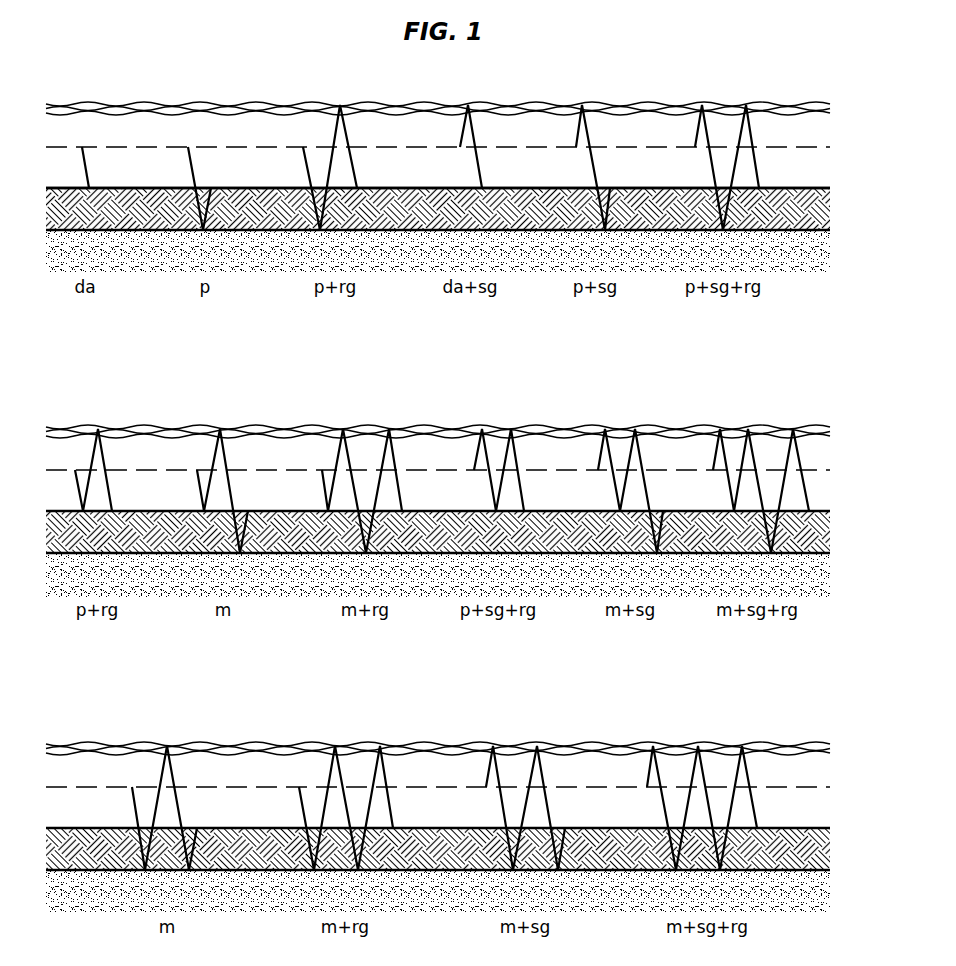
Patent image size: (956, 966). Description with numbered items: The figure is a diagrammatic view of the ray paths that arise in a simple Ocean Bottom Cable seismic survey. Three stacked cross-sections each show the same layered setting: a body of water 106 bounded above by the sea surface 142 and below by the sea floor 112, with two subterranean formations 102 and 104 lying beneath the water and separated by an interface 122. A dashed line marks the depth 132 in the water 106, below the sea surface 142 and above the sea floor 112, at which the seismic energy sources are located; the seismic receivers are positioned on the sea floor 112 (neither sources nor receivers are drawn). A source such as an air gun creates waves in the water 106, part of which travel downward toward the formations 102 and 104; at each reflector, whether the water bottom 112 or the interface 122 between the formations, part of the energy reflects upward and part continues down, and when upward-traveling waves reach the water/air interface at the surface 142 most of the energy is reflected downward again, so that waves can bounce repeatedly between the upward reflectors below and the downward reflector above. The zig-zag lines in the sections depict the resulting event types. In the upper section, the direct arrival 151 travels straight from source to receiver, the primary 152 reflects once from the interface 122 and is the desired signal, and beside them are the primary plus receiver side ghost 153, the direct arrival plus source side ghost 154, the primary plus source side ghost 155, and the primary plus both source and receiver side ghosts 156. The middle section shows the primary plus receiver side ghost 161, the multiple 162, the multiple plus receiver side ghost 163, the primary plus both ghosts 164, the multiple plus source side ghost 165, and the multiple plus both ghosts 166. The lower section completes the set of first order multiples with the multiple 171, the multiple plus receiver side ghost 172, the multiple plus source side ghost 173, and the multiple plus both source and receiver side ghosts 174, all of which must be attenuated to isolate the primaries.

The sea surface 142 is at (817, 106).
The source depth 132 is at (817, 147).
The sea floor 112 is at (817, 188).
The interface 122 is at (817, 230).
The body of water 106 is at (388, 178).
The subterranean formation 102 is at (388, 218).
The subterranean formation 104 is at (388, 261).
The direct arrival 151 is at (100, 162).
The primary 152 is at (210, 164).
The primary plus receiver side ghost 153 is at (320, 126).
The direct arrival plus source side ghost 154 is at (487, 123).
The primary plus source side ghost 155 is at (605, 122).
The primary plus both source and receiver side ghosts 156 is at (766, 122).
The primary plus receiver side ghost 161 is at (118, 448).
The multiple 162 is at (240, 450).
The multiple plus receiver side ghost 163 is at (410, 446).
The primary plus both source and receiver side ghosts 164 is at (535, 445).
The multiple plus source side ghost 165 is at (658, 445).
The multiple plus both source and receiver side ghosts 166 is at (770, 445).
The multiple 171 is at (145, 766).
The multiple plus receiver side ghost 172 is at (313, 766).
The multiple plus source side ghost 173 is at (558, 762).
The multiple plus both source and receiver side ghosts 174 is at (766, 762).